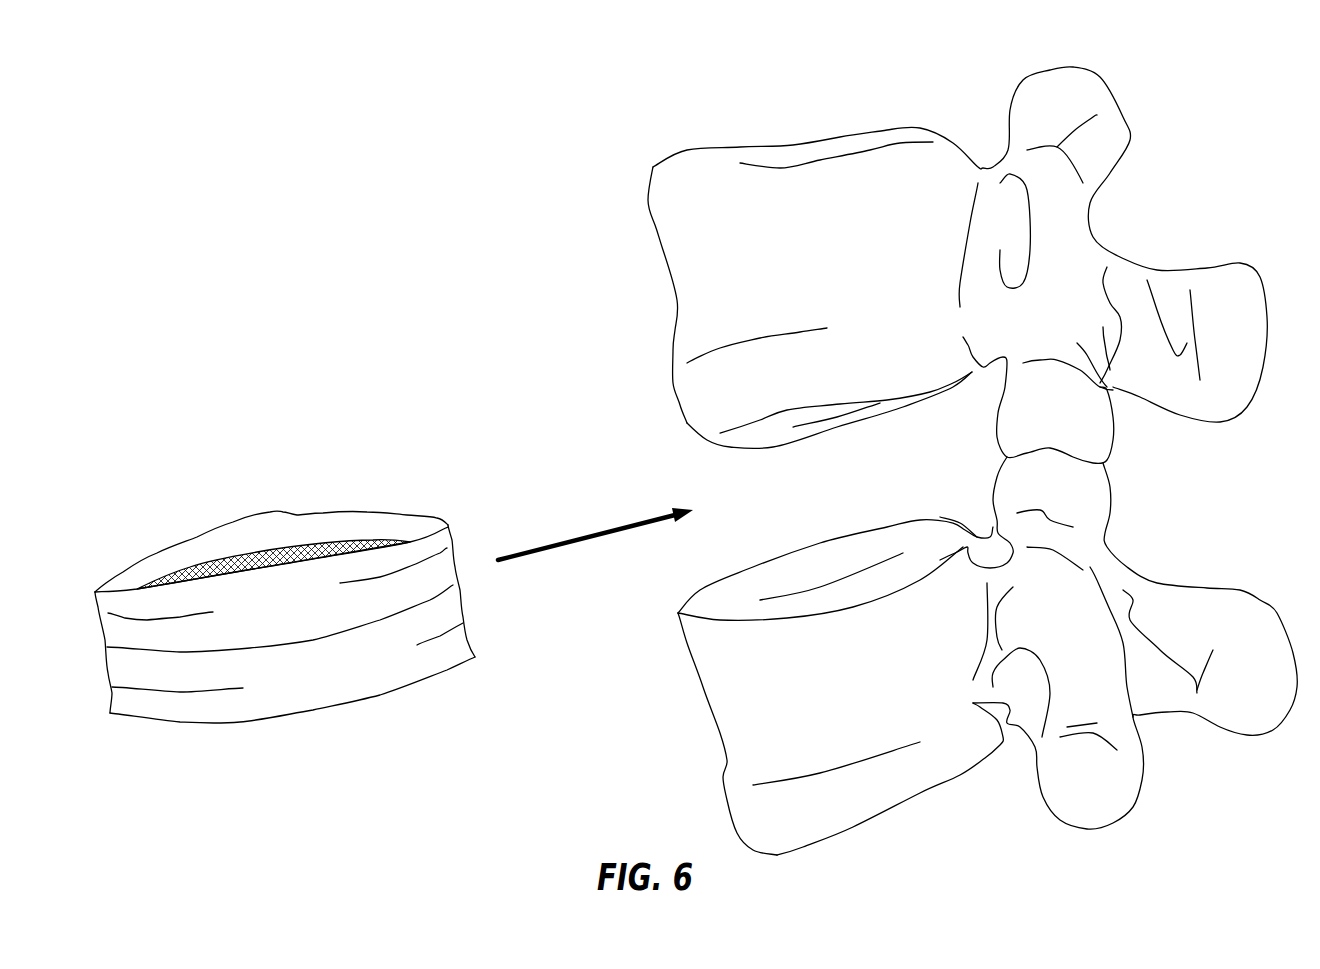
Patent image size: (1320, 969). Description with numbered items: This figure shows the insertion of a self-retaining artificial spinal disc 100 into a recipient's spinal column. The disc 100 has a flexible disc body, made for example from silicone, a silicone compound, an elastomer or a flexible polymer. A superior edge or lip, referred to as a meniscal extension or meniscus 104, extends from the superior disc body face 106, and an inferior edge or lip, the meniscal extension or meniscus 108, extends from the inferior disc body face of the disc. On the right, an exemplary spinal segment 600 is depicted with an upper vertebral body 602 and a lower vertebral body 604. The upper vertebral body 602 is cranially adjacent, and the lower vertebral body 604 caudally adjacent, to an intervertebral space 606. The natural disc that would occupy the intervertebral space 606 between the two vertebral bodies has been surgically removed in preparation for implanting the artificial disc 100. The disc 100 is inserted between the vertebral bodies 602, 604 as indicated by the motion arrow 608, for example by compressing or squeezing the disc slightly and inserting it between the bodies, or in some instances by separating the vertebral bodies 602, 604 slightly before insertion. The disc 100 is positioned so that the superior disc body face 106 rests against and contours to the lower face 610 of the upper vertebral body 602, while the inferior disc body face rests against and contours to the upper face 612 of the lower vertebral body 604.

The self-retaining artificial spinal disc 100 is at (193, 677).
The meniscal extension 104 is at (235, 520).
The superior disc body face 106 is at (297, 547).
The meniscal extension 108 is at (213, 727).
The spinal segment 600 is at (1207, 138).
The upper vertebral body 602 is at (720, 213).
The lower vertebral body 604 is at (820, 803).
The intervertebral space 606 is at (799, 505).
The motion arrow 608 is at (567, 540).
The lower face 610 is at (773, 433).
The upper face 612 is at (733, 603).